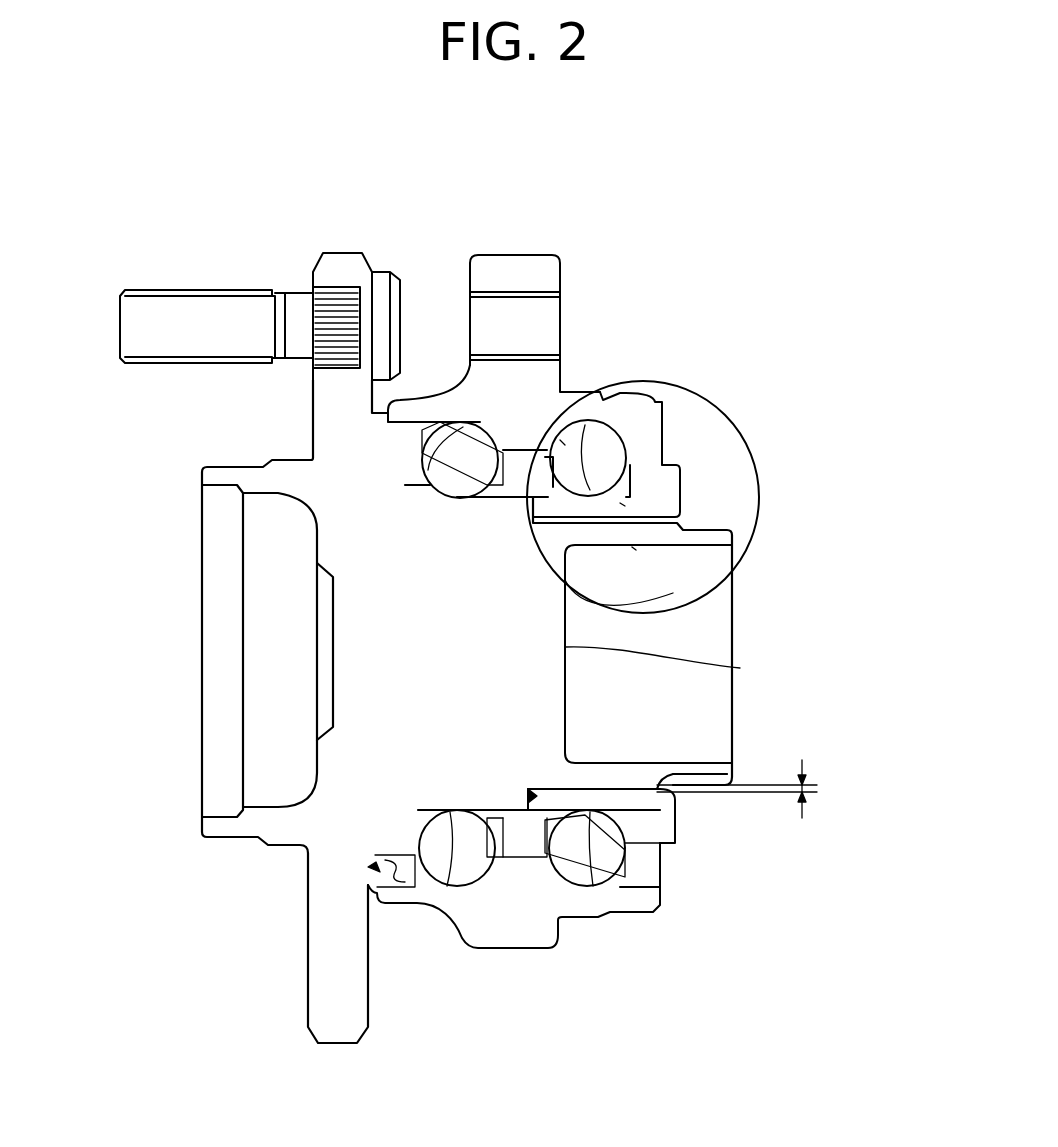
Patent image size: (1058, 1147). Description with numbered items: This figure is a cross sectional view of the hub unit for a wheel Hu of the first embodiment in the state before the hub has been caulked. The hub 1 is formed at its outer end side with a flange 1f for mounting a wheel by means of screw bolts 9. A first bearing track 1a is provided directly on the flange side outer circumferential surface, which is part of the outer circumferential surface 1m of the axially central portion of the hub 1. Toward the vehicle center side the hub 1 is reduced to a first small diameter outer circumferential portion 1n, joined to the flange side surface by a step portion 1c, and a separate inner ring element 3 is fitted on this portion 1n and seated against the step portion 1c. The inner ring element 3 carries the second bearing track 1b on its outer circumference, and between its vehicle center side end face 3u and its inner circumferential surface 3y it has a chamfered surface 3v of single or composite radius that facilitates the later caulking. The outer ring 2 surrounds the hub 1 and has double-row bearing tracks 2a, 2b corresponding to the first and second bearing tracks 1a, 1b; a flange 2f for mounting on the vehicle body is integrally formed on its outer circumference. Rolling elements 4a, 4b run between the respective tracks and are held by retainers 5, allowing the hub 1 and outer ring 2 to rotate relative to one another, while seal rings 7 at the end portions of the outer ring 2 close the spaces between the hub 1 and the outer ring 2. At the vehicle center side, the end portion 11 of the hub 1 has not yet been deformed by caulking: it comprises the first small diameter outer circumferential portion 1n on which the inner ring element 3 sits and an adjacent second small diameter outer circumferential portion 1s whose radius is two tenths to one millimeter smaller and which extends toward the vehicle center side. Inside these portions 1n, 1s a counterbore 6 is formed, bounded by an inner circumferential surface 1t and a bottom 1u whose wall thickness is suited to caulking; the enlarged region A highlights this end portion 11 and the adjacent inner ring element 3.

The hub 1 is at (225, 763).
The first bearing track 1a is at (450, 887).
The second bearing track 1b is at (592, 887).
The step portion 1c is at (528, 790).
The flange 1f is at (323, 942).
The outer circumferential surface of the axially central portion 1m is at (520, 830).
The first small diameter outer circumferential portion 1n is at (622, 505).
The second small diameter outer circumferential portion 1s is at (702, 792).
The inner circumferential surface of the counterbore 1t is at (632, 547).
The bottom of the counterbore 1u is at (740, 668).
The outer ring 2 is at (500, 900).
The bearing track of the outer ring 2a is at (420, 472).
The bearing track of the outer ring 2b is at (583, 427).
The flange 2f is at (516, 272).
The inner ring element 3 is at (653, 493).
The vehicle center side end face 3u is at (680, 473).
The chamfered surface 3v is at (725, 771).
The inner circumferential surface of the inner ring element 3y is at (557, 787).
The rolling elements 4a is at (460, 432).
The rolling elements 4b is at (597, 440).
The retainers 5 is at (490, 485).
The counterbore 6 is at (712, 706).
The seal rings 7 is at (375, 860).
The screw bolts 9 is at (146, 343).
The vehicle center side end portion 11 is at (737, 538).
The enlarged region A is at (723, 413).
The hub unit for a wheel Hu is at (185, 578).